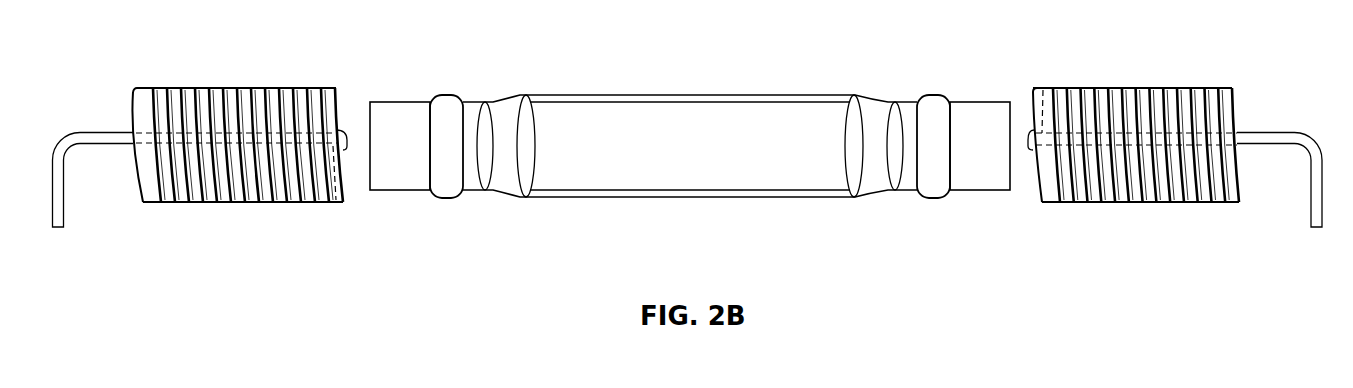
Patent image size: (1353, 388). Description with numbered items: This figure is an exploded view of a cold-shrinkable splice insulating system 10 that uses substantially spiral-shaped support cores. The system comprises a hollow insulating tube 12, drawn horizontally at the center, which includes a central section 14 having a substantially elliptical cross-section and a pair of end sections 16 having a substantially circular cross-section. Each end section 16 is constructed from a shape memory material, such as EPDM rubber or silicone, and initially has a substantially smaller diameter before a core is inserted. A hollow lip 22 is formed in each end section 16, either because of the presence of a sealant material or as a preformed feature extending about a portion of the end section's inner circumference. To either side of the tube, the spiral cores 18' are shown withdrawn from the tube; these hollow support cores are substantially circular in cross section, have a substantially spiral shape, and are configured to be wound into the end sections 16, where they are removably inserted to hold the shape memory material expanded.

The cold-shrinkable splice insulating system 10 is at (764, 238).
The hollow insulating tube 12 is at (762, 93).
The central section 14 is at (602, 95).
The end sections 16 is at (398, 102).
The spiral cores 18' is at (688, 148).
The hollow lip 22 is at (448, 95).